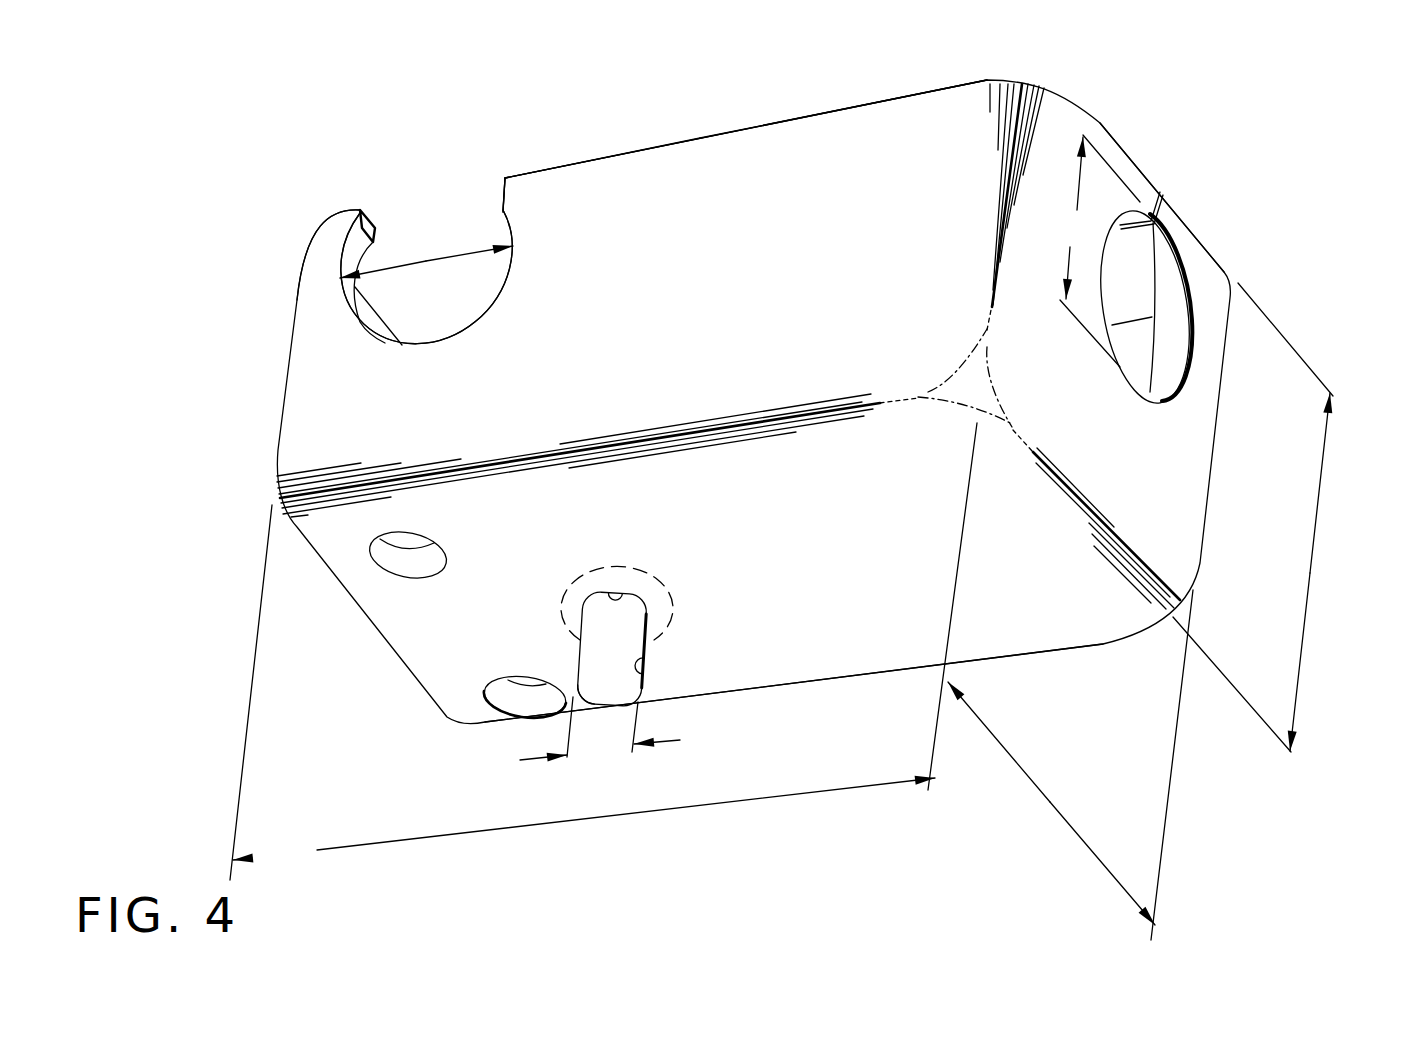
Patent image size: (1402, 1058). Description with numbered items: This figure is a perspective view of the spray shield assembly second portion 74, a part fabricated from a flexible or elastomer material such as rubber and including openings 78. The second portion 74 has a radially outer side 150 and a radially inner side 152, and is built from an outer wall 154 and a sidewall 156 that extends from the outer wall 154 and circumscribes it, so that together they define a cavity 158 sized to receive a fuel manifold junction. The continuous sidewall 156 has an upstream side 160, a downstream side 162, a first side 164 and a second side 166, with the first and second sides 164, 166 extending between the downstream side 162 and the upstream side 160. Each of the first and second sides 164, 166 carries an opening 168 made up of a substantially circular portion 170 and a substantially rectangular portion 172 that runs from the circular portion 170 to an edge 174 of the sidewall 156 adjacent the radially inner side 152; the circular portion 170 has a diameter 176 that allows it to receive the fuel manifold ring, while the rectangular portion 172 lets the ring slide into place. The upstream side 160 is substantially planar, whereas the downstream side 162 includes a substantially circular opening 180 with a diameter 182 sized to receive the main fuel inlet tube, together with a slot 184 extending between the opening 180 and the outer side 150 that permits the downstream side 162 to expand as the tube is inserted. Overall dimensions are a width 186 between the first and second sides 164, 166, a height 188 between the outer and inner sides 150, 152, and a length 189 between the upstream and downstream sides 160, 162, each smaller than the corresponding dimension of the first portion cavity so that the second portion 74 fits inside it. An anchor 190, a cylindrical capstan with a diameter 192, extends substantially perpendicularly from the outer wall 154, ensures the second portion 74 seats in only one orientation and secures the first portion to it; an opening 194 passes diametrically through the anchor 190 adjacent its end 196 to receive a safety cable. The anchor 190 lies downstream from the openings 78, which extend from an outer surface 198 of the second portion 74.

The spray shield assembly second portion 74 is at (247, 126).
The openings 78 is at (387, 557).
The radially outer side 150 is at (973, 618).
The radially inner side 152 is at (745, 120).
The outer wall 154 is at (798, 623).
The sidewall 156 is at (903, 163).
The cavity 158 is at (490, 177).
The upstream side 160 is at (278, 277).
The downstream side 162 is at (1229, 252).
The first side 164 is at (627, 207).
The second side 166 is at (1135, 347).
The opening 168 is at (385, 207).
The substantially circular portion 170 is at (448, 294).
The substantially rectangular portion 172 is at (468, 203).
The edge 174 is at (765, 120).
The diameter 176 is at (460, 252).
The opening 180 is at (1170, 353).
The diameter 182 is at (1096, 251).
The slot 184 is at (1162, 208).
The width 186 is at (1041, 786).
The height 188 is at (1307, 588).
The length 189 is at (600, 818).
The anchor 190 is at (613, 596).
The diameter 192 is at (520, 760).
The opening 194 is at (641, 667).
The end 196 is at (602, 690).
The outer surface 198 is at (812, 539).